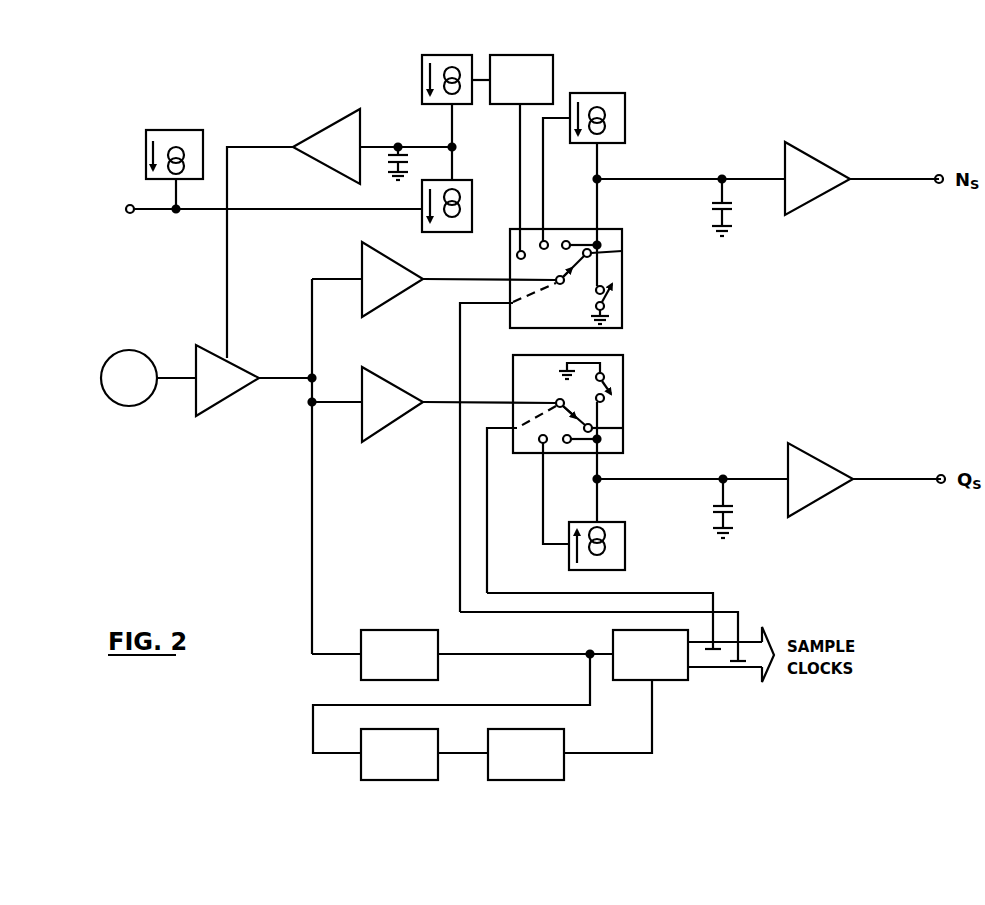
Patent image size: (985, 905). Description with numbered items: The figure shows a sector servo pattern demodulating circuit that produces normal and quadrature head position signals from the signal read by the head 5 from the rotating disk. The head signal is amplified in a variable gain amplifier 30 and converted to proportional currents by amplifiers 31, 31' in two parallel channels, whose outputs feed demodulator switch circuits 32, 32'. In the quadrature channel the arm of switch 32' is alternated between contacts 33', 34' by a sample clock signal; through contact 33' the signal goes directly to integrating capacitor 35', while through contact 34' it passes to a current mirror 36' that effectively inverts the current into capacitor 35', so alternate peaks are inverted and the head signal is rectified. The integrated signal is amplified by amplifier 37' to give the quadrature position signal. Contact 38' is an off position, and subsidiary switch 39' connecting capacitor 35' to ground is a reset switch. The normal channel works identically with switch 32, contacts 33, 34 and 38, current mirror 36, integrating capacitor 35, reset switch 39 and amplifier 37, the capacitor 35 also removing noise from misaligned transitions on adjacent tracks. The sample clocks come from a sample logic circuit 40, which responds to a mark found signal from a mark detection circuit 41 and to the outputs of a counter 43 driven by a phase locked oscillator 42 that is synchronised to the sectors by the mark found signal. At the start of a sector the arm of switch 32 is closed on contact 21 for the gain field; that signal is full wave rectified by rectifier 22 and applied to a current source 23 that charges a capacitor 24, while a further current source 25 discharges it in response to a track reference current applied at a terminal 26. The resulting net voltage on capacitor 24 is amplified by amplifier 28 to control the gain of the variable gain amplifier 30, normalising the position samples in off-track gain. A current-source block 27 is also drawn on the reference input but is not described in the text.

The head 5 is at (132, 408).
The variable gain amplifier 30 is at (218, 406).
The amplifier 31 is at (392, 286).
The amplifier 31' is at (392, 412).
The current source 27 is at (193, 130).
The terminal 26 is at (130, 213).
The amplifier 28 is at (333, 124).
The capacitor 24 is at (406, 160).
The current source 23 is at (422, 72).
The rectifier 22 is at (553, 66).
The current source 25 is at (472, 201).
The current mirror 36 is at (620, 117).
The current mirror 36' is at (621, 546).
The integrating capacitor 35 is at (704, 207).
The integrating capacitor 35' is at (704, 508).
The amplifier 37 is at (822, 184).
The amplifier 37' is at (828, 485).
The demodulator switch circuit 32 is at (585, 278).
The demodulator switch circuit 32' is at (592, 404).
The contact 21 is at (517, 255).
The contact 33 is at (579, 229).
The contact 33' is at (567, 459).
The contact 34 is at (556, 220).
The contact 34' is at (526, 459).
The contact 38 is at (621, 252).
The contact 38' is at (627, 427).
The subsidiary switch 39 is at (625, 304).
The subsidiary switch 39' is at (615, 382).
The sample logic circuit 40 is at (670, 680).
The mark detection circuit 41 is at (390, 630).
The phase locked oscillator 42 is at (361, 768).
The counter 43 is at (564, 765).